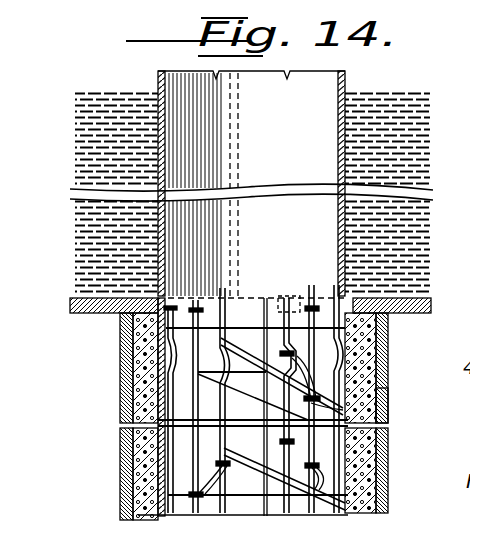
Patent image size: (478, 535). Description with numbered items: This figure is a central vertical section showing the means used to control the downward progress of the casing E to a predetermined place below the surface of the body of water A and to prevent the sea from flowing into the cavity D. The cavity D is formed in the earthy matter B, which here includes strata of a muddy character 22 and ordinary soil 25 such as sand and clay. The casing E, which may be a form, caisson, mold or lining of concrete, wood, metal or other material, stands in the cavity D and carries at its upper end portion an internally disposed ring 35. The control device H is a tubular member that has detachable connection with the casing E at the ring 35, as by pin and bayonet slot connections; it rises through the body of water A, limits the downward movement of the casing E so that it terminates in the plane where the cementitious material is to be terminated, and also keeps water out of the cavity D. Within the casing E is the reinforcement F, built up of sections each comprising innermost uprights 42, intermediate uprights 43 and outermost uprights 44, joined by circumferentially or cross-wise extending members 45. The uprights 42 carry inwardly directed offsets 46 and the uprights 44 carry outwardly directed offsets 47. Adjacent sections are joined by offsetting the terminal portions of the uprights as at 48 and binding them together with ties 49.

The control device H is at (150, 67).
The body of water A is at (70, 144).
The muddy earthy matter 22 is at (103, 304).
The internally disposed ring 35 is at (372, 297).
The ordinary soil 25 is at (112, 386).
The reinforcement F is at (128, 441).
The outwardly directed offset 47 is at (368, 338).
The earthy matter B is at (372, 354).
The casing E is at (372, 388).
The cavity D is at (355, 446).
The upright member 43 is at (185, 510).
The upright member 42 is at (215, 293).
The offset terminal portion 48 is at (332, 373).
The tie 49 is at (340, 466).
The upright member 44 is at (345, 496).
The cross-wise extending member 45 is at (258, 350).
The inwardly directed offset 46 is at (258, 459).